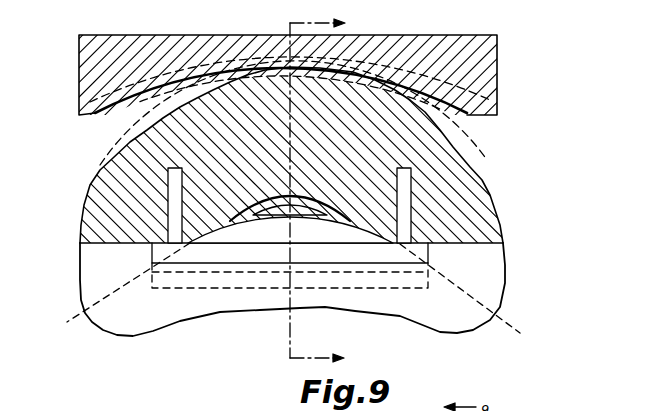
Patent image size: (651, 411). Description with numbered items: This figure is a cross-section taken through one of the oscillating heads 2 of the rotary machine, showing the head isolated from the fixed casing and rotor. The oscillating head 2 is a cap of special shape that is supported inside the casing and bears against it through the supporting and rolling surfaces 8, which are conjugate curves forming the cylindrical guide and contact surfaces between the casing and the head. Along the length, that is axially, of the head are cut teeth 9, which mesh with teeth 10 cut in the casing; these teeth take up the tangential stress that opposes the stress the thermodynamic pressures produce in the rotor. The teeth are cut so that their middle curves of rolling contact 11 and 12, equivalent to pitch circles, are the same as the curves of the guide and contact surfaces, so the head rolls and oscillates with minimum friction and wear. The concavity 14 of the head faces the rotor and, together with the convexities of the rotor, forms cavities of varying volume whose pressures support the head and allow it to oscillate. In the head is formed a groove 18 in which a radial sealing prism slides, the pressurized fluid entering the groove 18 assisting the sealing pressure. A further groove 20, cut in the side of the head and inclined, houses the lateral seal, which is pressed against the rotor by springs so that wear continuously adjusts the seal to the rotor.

The oscillating head 2 is at (478, 210).
The supporting and rolling surfaces 8 is at (480, 57).
The teeth 9 is at (463, 143).
The teeth 10 is at (118, 109).
The middle curve of rolling contact 11 is at (118, 155).
The middle curve of rolling contact 12 is at (480, 107).
The concavity 14 is at (257, 232).
The groove 18 is at (173, 222).
The groove 20 is at (375, 253).